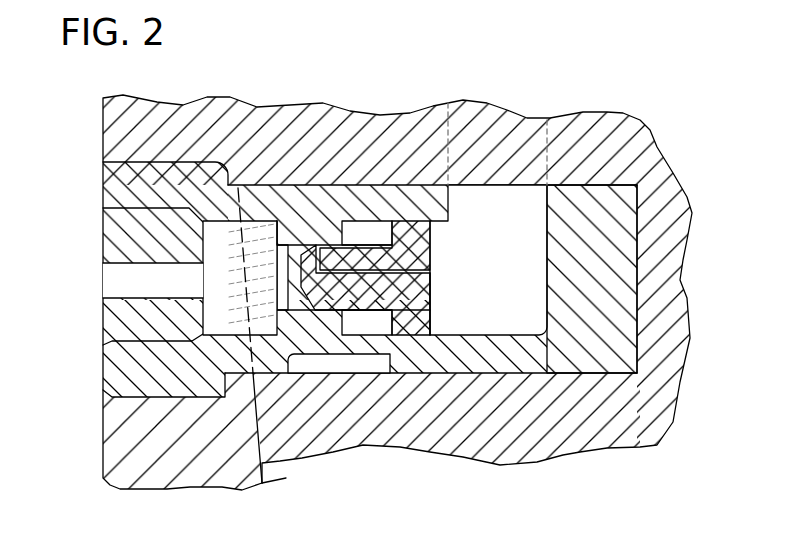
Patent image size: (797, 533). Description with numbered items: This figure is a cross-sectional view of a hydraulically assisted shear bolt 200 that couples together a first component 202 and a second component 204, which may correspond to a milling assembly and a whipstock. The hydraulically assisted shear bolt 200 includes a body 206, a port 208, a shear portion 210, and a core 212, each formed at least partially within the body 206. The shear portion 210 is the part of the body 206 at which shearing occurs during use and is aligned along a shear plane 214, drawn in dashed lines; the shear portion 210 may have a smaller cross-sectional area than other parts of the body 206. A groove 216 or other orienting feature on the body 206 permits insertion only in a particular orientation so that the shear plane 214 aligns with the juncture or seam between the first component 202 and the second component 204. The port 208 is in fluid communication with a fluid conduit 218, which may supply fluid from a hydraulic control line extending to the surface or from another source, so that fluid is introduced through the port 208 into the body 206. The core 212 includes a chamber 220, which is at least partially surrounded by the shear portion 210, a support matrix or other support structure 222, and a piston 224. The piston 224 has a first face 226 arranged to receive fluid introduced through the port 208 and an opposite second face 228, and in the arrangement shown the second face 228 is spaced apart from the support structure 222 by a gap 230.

The hydraulically assisted shear bolt 200 is at (595, 76).
The first component 202 is at (347, 438).
The second component 204 is at (228, 480).
The body 206 is at (540, 375).
The port 208 is at (523, 186).
The shear portion 210 is at (237, 177).
The core 212 is at (540, 277).
The shear plane 214 is at (248, 296).
The groove 216 is at (371, 364).
The fluid conduit 218 is at (452, 126).
The chamber 220 is at (218, 221).
The support structure 222 is at (274, 221).
The piston 224 is at (430, 237).
The first face 226 is at (430, 312).
The second face 228 is at (300, 278).
The gap 230 is at (300, 246).